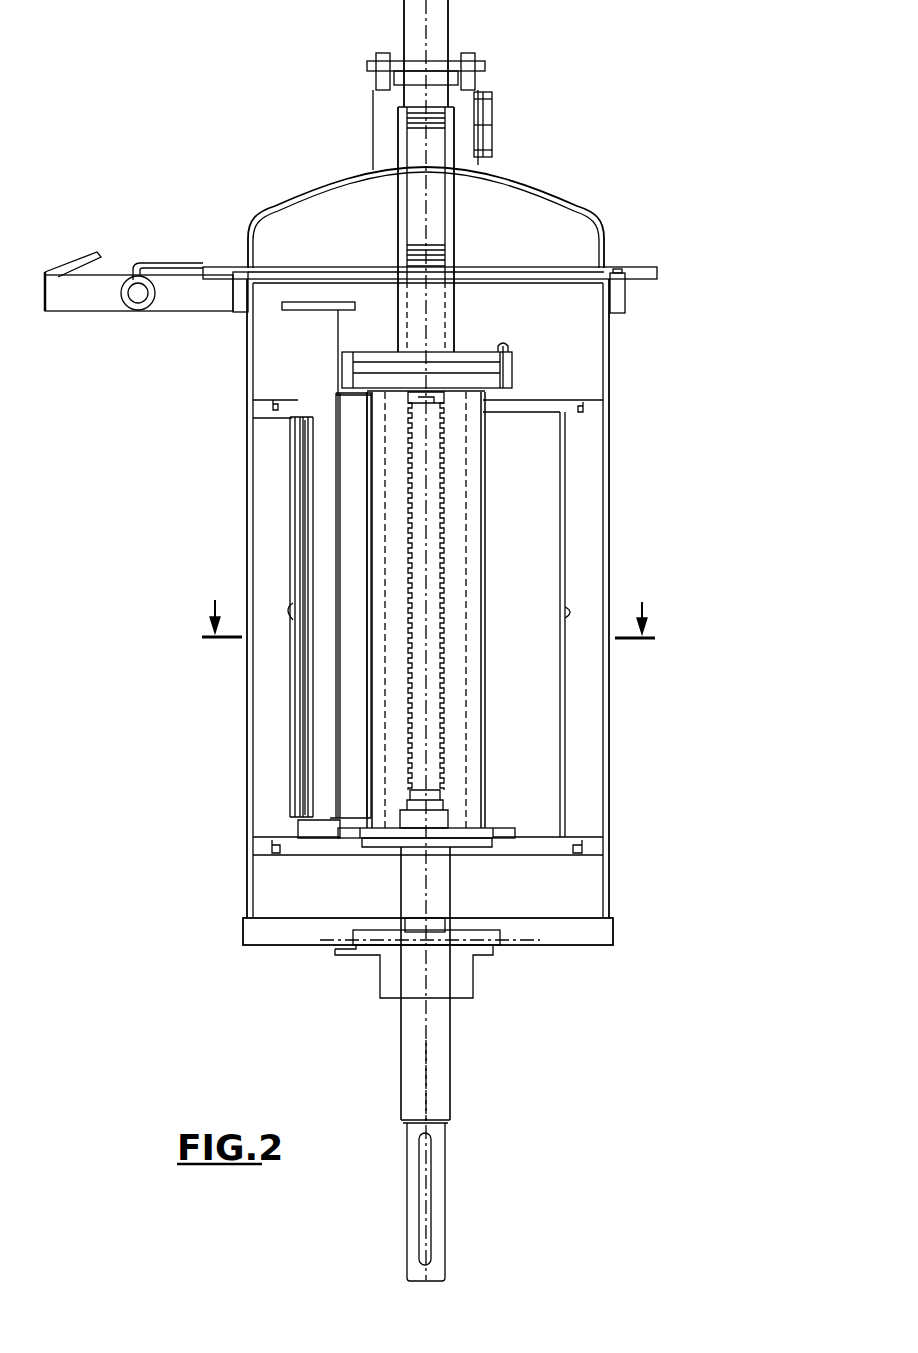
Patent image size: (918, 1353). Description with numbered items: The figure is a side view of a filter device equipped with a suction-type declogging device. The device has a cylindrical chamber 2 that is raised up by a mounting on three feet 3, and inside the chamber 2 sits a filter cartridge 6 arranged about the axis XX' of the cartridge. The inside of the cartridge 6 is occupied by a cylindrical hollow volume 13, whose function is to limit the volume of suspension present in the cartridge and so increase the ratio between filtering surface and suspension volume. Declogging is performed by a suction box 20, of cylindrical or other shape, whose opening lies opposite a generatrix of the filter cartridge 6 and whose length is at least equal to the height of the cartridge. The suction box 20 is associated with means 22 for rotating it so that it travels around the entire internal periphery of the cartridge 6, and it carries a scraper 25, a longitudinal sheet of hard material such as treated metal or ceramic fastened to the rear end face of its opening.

The cylindrical chamber 2 is at (250, 884).
The filter cartridge 6 is at (293, 463).
The cylindrical hollow volume 13 is at (463, 476).
The suction box 20 is at (325, 707).
The means for rotating the suction box 22 is at (488, 357).
The scraper 25 is at (305, 528).
The feet 3 is at (428, 605).
The axis of the cartridge XX' is at (475, 1080).